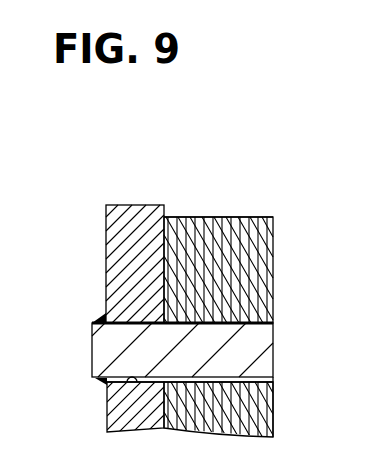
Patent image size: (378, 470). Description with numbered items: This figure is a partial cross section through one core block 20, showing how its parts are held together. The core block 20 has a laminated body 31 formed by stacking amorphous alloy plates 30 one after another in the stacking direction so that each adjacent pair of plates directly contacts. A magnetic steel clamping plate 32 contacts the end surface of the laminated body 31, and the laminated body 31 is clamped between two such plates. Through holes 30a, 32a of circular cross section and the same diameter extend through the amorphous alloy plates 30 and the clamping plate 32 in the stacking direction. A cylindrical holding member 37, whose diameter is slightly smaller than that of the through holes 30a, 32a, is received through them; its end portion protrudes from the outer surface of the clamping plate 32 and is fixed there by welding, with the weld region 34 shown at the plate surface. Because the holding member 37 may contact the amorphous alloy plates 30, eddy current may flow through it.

The core block 20 is at (292, 202).
The amorphous alloy plate 30 is at (267, 253).
The through hole 30a is at (262, 378).
The laminated body 31 is at (205, 217).
The clamping plate 32 is at (132, 272).
The through hole 32a is at (110, 408).
The fillet / joint portion 34 is at (105, 322).
The holding member 37 is at (110, 347).